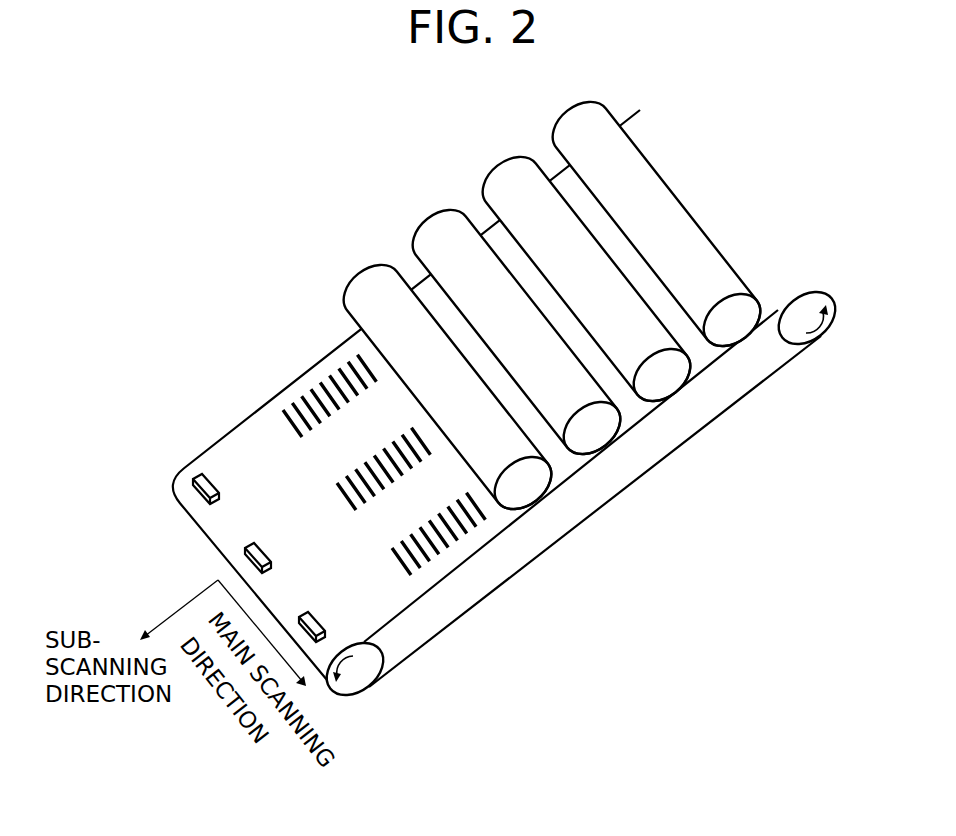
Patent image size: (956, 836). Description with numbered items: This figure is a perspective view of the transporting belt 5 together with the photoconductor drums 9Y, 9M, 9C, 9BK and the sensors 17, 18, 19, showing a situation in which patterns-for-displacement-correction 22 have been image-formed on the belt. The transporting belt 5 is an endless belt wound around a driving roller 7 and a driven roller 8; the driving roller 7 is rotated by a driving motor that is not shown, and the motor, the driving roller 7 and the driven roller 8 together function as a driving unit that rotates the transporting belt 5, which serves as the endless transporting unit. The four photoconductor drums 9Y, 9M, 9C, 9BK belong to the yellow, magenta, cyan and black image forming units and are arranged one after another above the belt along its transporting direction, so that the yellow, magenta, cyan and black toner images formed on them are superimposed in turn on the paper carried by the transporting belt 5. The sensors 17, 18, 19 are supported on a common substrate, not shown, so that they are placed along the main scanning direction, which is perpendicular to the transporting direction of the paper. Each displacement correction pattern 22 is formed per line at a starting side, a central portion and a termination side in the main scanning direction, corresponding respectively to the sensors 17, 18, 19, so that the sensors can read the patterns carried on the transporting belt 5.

The transporting belt 5 is at (533, 556).
The driving roller 7 is at (365, 681).
The driven roller 8 is at (795, 337).
The photoconductor drum 9BK is at (368, 267).
The photoconductor drum 9C is at (437, 213).
The photoconductor drum 9M is at (507, 160).
The photoconductor drum 9Y is at (577, 104).
The sensor 17 is at (342, 612).
The sensor 18 is at (285, 544).
The sensor 19 is at (233, 474).
The displacement correction pattern 22 is at (297, 435).